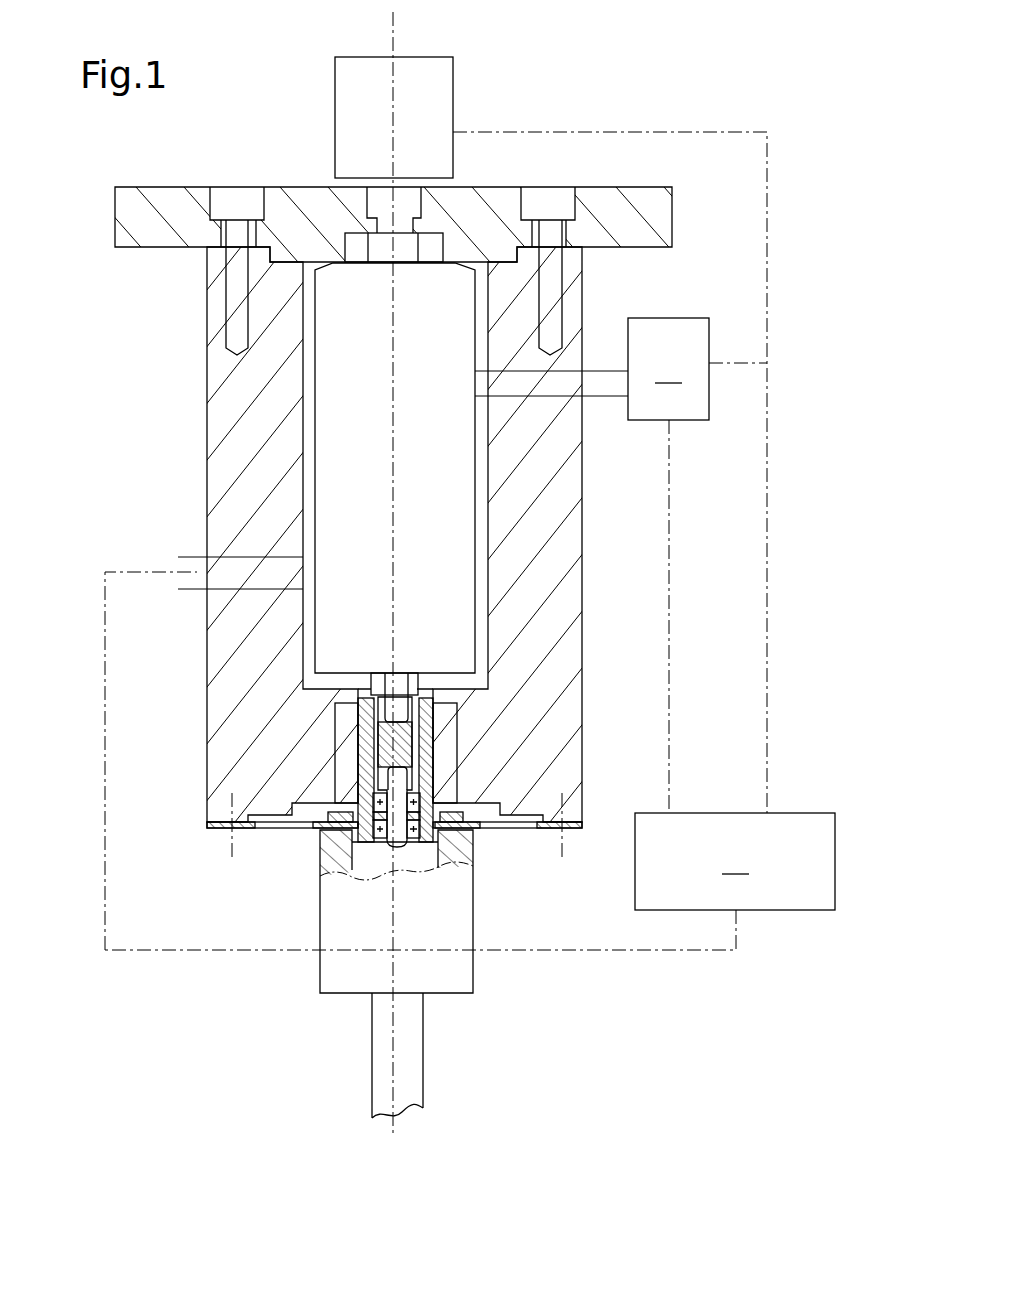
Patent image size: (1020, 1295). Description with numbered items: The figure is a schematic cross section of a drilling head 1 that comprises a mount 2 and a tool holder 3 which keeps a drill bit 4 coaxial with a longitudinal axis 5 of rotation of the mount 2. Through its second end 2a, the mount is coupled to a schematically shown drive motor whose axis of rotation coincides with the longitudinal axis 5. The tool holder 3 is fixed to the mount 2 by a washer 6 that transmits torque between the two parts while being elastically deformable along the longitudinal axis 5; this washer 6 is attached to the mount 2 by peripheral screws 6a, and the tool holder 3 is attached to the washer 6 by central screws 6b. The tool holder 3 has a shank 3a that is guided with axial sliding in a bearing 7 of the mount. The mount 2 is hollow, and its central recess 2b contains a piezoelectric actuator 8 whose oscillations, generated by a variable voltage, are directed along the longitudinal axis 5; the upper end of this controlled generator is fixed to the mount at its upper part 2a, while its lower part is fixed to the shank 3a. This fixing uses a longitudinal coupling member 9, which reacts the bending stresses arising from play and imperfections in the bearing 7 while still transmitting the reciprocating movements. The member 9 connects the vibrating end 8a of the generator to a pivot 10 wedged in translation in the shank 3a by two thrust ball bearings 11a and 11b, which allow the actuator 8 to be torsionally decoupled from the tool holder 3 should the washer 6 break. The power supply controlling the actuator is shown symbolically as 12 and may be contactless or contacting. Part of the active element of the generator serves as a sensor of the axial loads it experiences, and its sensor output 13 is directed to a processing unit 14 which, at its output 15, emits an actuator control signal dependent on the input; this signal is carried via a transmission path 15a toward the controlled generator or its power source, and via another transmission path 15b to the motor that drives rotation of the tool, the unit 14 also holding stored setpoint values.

The drilling head 1 is at (80, 320).
The mount 2 is at (572, 448).
The second end of the mount 2a is at (478, 185).
The central recess 2b is at (475, 517).
The tool holder 3 is at (465, 978).
The shank 3a is at (427, 720).
The drill bit 4 is at (385, 1105).
The longitudinal axis 5 is at (390, 37).
The washer 6 is at (297, 828).
The peripheral screws 6a is at (222, 848).
The central screws 6b is at (335, 812).
The bearing 7 is at (360, 710).
The piezoelectric actuator 8 is at (475, 303).
The vibrating end 8a is at (391, 707).
The longitudinal coupling member 9 is at (400, 742).
The pivot 10 is at (403, 868).
The thrust ball bearing 11a is at (413, 803).
The thrust ball bearing 11b is at (385, 866).
The power supply 12 is at (592, 369).
The sensor output 13 is at (180, 578).
The processing unit 14 is at (470, 881).
The output 15 is at (768, 812).
The transmission path 15a is at (669, 552).
The transmission path 15b is at (767, 467).